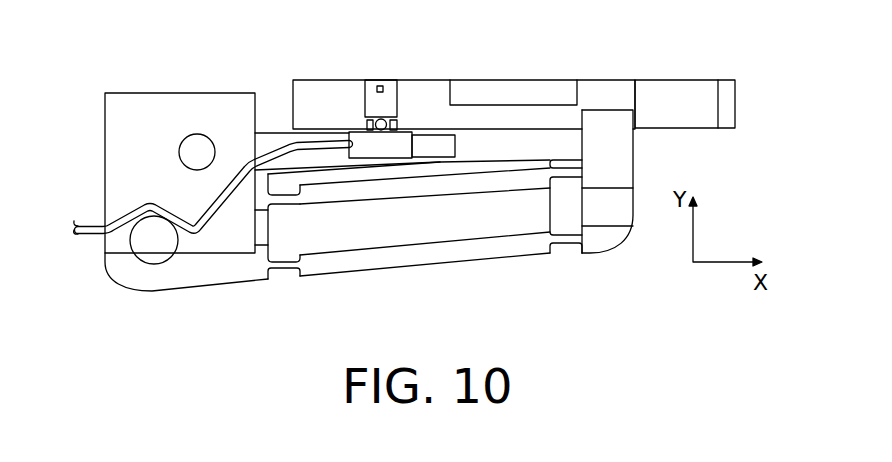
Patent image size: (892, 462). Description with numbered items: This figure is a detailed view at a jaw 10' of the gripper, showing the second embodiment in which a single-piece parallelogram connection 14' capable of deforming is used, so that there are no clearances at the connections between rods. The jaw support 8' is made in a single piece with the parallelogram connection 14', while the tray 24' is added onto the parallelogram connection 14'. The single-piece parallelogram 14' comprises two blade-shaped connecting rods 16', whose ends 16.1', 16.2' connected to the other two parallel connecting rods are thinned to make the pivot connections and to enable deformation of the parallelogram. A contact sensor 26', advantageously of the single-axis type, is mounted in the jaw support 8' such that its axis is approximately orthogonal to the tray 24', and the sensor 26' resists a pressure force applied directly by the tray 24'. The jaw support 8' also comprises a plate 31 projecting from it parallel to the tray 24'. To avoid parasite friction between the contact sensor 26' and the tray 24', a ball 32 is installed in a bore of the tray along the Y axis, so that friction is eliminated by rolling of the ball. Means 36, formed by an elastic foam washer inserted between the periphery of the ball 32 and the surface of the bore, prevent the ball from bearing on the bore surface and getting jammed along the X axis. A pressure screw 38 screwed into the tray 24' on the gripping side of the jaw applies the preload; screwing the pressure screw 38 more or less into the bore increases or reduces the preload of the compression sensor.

The jaw 10' is at (446, 183).
The jaw support 8' is at (186, 225).
The parallelogram connection 14' is at (444, 218).
The connecting rods 16' is at (409, 250).
The end of connecting rod 16.1' is at (285, 258).
The end of connecting rod 16.2' is at (593, 239).
The tray 24' is at (514, 69).
The contact sensor 26' is at (380, 188).
The plate 31 is at (427, 158).
The ball 32 is at (377, 118).
The means to prevent ball jamming 36 is at (367, 122).
The pressure screw 38 is at (390, 98).